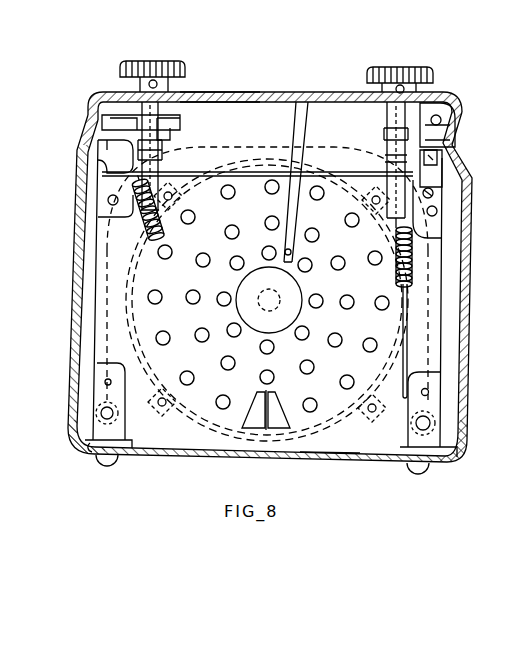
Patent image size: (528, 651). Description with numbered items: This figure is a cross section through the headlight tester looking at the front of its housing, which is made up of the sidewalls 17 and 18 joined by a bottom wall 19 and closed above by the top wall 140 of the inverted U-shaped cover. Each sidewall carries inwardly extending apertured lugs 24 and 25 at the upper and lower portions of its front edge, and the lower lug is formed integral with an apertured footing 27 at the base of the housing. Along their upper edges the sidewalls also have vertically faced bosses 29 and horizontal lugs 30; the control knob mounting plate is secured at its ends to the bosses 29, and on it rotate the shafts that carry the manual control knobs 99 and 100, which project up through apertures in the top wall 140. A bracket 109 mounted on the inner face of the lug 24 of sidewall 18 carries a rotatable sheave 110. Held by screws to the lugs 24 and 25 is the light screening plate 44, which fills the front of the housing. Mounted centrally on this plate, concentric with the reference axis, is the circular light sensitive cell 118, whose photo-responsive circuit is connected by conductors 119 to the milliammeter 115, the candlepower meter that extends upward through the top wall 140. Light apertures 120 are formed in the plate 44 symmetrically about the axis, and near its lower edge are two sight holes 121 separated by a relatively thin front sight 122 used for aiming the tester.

The sidewall 17 is at (78, 290).
The sidewall 18 is at (464, 267).
The bottom wall 19 is at (386, 460).
The apertured lug 24 is at (112, 184).
The apertured lug 25 is at (108, 376).
The apertured footing 27 is at (94, 454).
The vertically faced boss 29 is at (92, 160).
The horizontal lug 30 is at (112, 126).
The light screening plate 44 is at (331, 456).
The manual control knob 99 is at (183, 45).
The manual control knob 100 is at (404, 64).
The bracket 109 is at (435, 193).
The rotatable sheave 110 is at (430, 148).
The milliammeter 115 is at (280, 93).
The light sensitive cell 118 is at (301, 307).
The conductors 119 is at (297, 213).
The light apertures 120 is at (314, 351).
The sight holes 121 is at (265, 428).
The front sight 122 is at (275, 392).
The top wall 140 is at (213, 97).